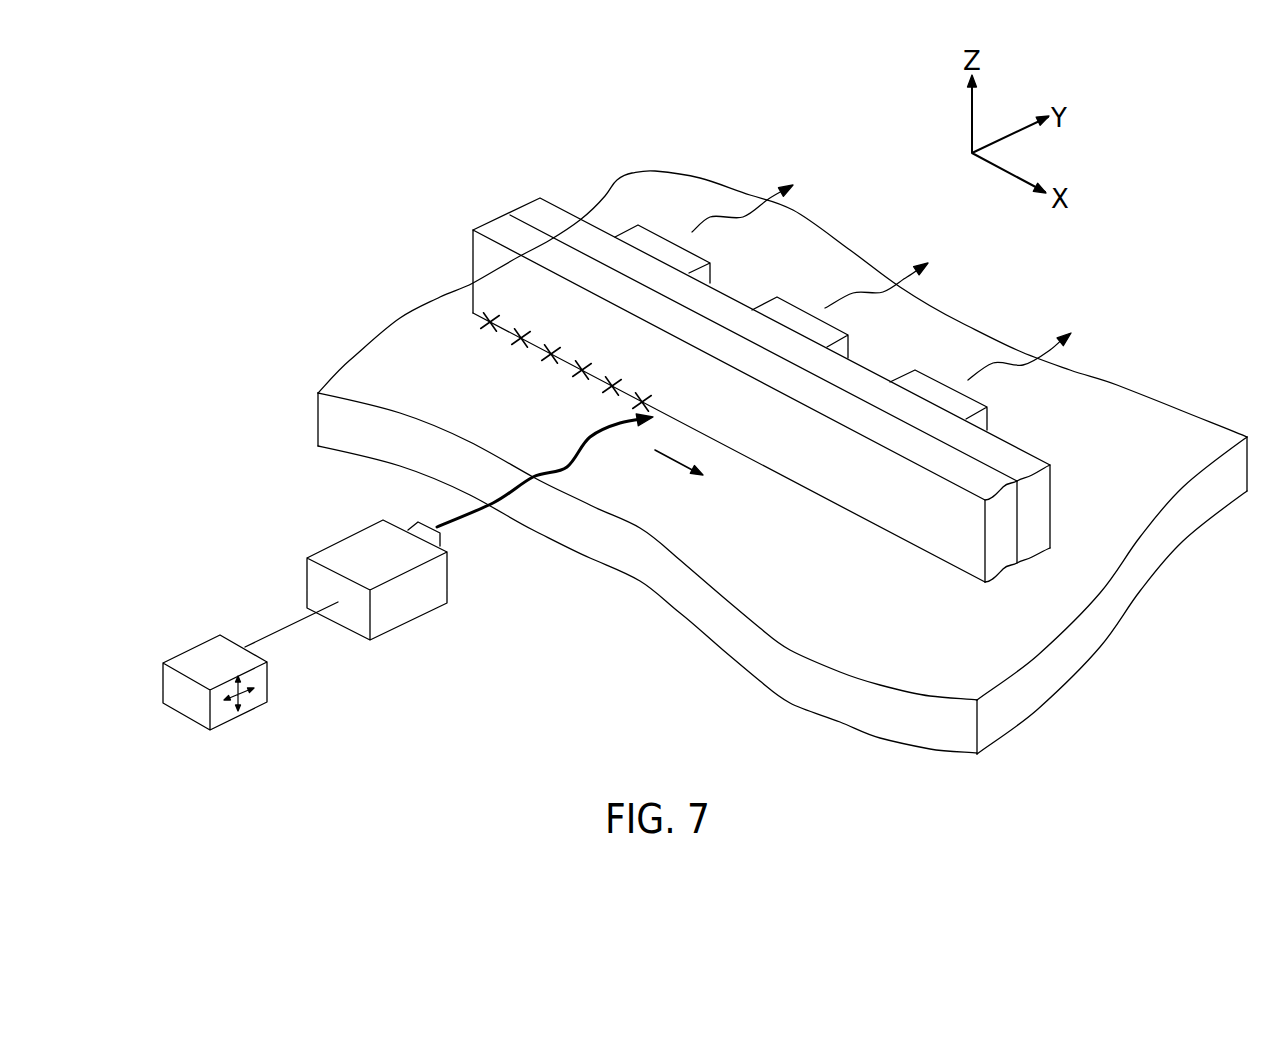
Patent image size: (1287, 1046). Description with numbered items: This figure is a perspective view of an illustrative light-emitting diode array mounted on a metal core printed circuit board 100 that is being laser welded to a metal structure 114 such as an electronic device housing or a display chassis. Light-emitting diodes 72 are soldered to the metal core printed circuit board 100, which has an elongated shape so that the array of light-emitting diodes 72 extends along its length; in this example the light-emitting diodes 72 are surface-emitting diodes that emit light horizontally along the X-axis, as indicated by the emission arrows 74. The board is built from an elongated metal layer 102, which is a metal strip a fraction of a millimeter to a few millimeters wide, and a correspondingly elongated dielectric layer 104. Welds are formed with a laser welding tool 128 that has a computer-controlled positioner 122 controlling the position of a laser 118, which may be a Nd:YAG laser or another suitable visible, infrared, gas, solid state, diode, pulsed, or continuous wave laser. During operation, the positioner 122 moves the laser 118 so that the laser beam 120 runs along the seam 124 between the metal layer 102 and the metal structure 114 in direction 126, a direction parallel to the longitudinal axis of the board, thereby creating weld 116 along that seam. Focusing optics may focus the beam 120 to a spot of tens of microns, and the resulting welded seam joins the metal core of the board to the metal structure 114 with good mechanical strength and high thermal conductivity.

The light-emitting diodes 72 is at (649, 242).
The emission direction arrows 74 is at (773, 194).
The metal core printed circuit board 100 is at (540, 178).
The metal layer 102 is at (493, 229).
The dielectric layer 104 is at (553, 217).
The metal structure 114 is at (995, 663).
The weld 116 is at (545, 355).
The laser 118 is at (407, 623).
The laser beam 120 is at (470, 513).
The positioner 122 is at (247, 713).
The seam 124 is at (833, 503).
The direction 126 is at (675, 468).
The laser welding tool 128 is at (384, 507).